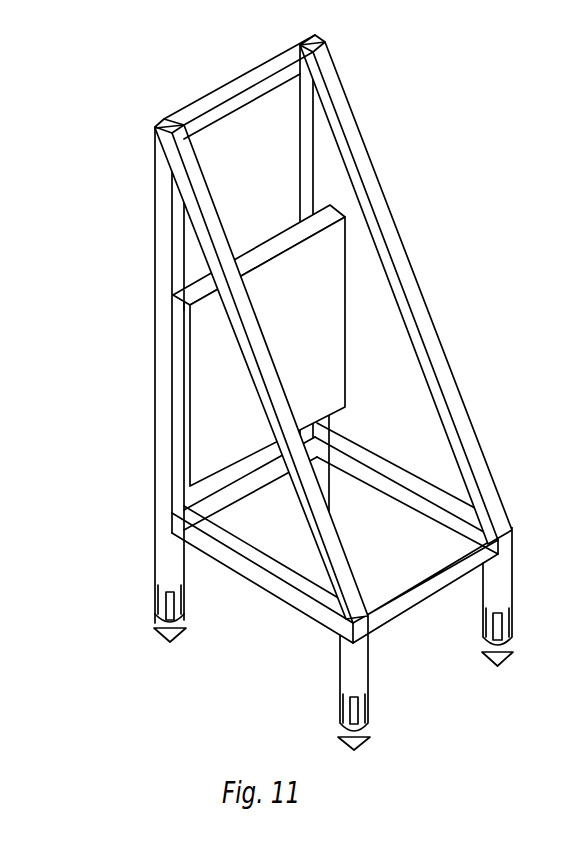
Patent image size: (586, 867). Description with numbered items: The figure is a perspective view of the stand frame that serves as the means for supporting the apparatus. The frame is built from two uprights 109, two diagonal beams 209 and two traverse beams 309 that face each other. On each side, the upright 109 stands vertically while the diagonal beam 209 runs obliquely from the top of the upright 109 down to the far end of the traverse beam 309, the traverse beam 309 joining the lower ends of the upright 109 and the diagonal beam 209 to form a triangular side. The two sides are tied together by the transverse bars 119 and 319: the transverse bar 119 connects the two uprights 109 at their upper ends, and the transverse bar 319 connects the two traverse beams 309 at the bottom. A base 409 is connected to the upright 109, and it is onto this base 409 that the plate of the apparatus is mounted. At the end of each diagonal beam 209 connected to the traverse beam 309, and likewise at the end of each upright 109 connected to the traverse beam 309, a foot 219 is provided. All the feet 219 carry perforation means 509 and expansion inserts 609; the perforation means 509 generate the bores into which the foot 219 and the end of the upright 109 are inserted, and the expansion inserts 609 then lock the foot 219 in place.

The upright 109 is at (302, 148).
The transverse bar 119 is at (224, 96).
The diagonal beam 209 is at (426, 311).
The foot 219 is at (166, 557).
The traverse beam 309 is at (267, 594).
The transverse bar 319 is at (419, 597).
The base 409 is at (207, 383).
The perforation means 509 is at (169, 640).
The expansion insert 609 is at (166, 606).